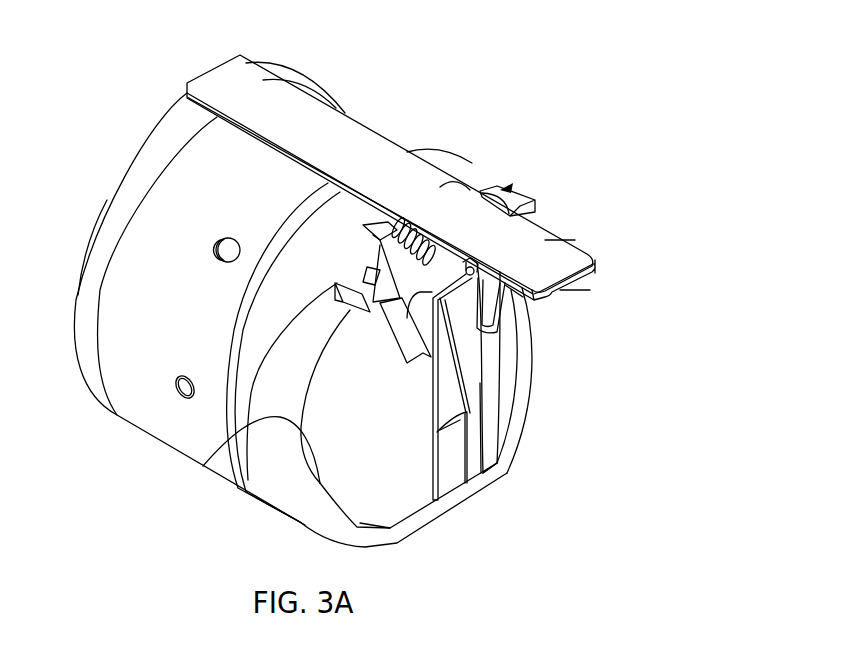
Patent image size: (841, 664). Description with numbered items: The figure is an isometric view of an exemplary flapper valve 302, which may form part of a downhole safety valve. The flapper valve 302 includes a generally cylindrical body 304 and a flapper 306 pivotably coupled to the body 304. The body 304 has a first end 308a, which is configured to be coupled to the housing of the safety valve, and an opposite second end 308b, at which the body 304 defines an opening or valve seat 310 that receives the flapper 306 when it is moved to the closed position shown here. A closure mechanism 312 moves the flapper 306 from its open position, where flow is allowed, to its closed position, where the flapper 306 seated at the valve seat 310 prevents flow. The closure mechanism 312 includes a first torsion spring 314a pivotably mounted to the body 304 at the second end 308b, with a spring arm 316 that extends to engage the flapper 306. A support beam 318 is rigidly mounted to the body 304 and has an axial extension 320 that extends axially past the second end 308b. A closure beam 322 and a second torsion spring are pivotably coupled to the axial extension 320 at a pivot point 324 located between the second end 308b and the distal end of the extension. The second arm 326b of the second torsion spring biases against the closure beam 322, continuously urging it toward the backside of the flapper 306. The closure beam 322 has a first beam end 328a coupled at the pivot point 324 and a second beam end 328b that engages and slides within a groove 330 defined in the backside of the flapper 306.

The flapper valve 302 is at (238, 515).
The body 304 is at (393, 120).
The flapper 306 is at (350, 480).
The first end 308a is at (106, 186).
The second end 308b is at (399, 546).
The valve seat 310 is at (203, 466).
The closure mechanism 312 is at (561, 227).
The first torsion spring 314a is at (360, 220).
The spring arm 316 is at (398, 332).
The support beam 318 is at (440, 187).
The axial extension 320 is at (584, 293).
The closure beam 322 is at (475, 360).
The pivot point 324 is at (472, 262).
The second arm 326b is at (428, 360).
The first beam end 328a is at (524, 298).
The second beam end 328b is at (455, 431).
The groove 330 is at (477, 470).